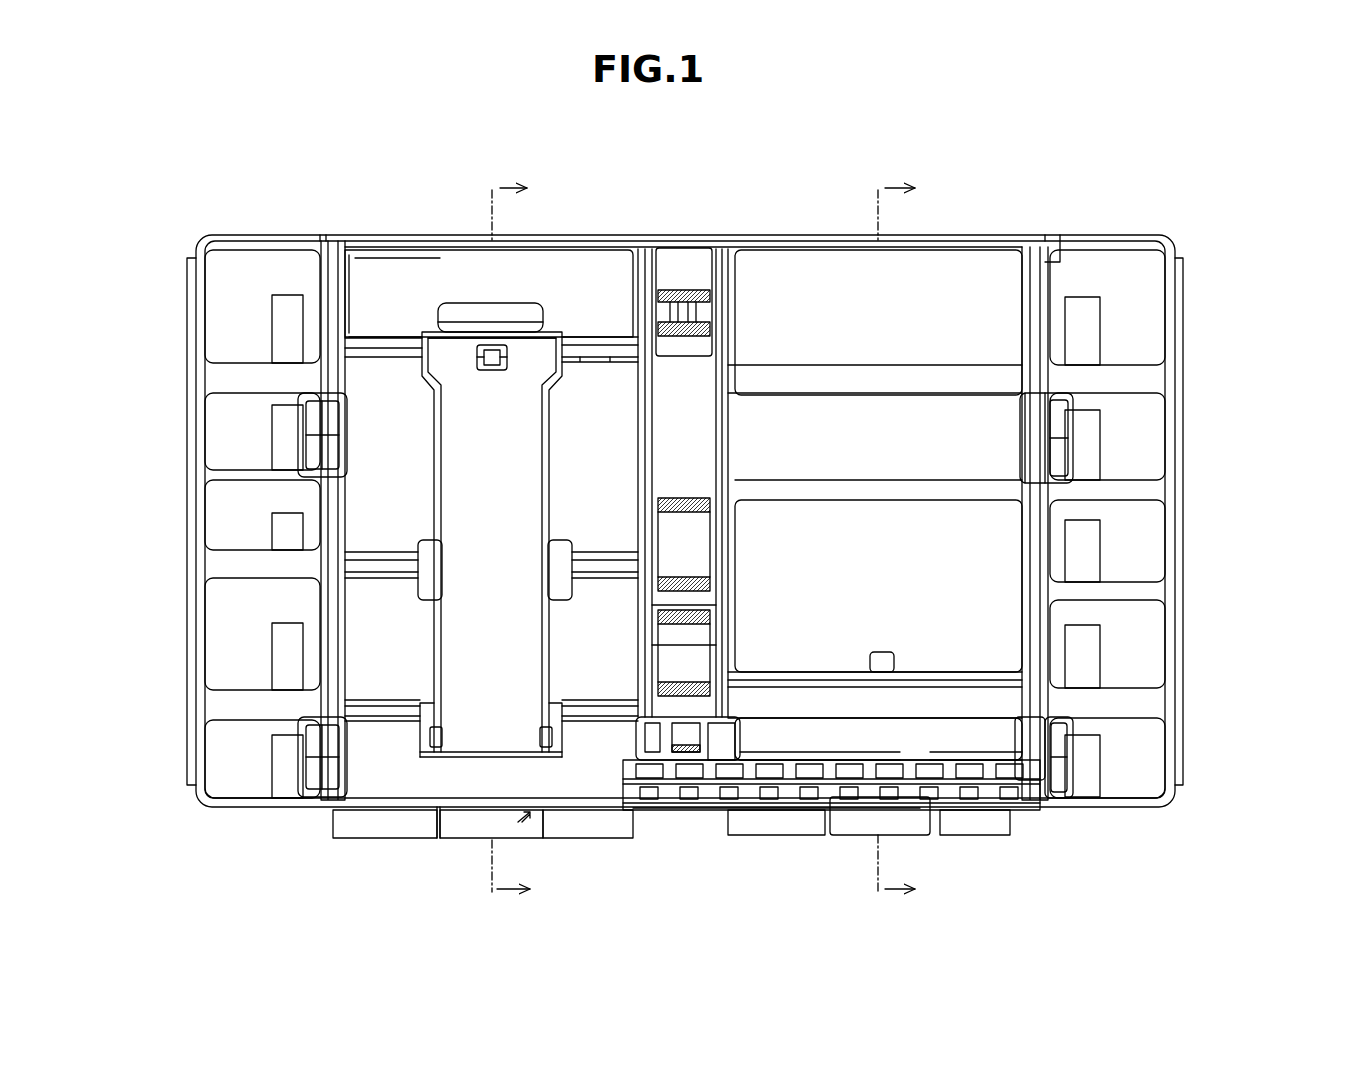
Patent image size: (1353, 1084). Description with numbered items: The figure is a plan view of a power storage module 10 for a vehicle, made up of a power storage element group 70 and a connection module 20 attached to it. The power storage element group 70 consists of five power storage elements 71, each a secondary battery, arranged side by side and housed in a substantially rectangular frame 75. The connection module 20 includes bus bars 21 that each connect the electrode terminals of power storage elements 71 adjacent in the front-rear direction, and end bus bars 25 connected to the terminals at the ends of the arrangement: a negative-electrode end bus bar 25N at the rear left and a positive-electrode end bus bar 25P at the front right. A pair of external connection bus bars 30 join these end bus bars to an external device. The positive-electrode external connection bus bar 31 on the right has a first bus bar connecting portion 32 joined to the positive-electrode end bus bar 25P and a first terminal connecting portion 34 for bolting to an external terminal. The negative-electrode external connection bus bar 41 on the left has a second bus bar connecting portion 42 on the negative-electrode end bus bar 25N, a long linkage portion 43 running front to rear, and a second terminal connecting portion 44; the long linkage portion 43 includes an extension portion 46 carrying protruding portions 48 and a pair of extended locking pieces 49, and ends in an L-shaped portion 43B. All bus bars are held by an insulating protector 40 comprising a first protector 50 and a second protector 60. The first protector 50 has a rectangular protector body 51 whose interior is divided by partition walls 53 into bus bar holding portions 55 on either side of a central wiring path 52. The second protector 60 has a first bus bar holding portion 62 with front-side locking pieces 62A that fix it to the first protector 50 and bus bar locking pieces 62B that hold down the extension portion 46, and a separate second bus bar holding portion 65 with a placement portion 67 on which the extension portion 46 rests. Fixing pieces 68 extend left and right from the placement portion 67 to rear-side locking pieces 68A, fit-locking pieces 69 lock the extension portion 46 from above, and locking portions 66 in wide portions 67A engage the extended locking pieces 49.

The power storage module 10 is at (270, 207).
The connection module 20 is at (826, 222).
The bus bar 21 is at (982, 283).
The end bus bar 25 is at (820, 756).
The negative-electrode end bus bar 25N is at (378, 278).
The positive-electrode end bus bar 25P is at (1010, 773).
The external connection bus bar 30 is at (800, 913).
The positive-electrode external connection bus bar 31 is at (840, 815).
The first bus bar connecting portion 32 is at (927, 773).
The first terminal connecting portion 34 is at (902, 803).
The insulating protector 40 is at (285, 892).
The negative-electrode external connection bus bar 41 is at (547, 840).
The second bus bar connecting portion 42 is at (505, 312).
The long linkage portion 43 is at (434, 440).
The L-shaped portion 43B is at (452, 773).
The second terminal connecting portion 44 is at (458, 808).
The extension portion 46 is at (415, 662).
The protruding portion 48 is at (428, 368).
The extended locking piece 49 is at (425, 588).
The first protector 50 is at (325, 829).
The protector body 51 is at (766, 240).
The wiring path 52 is at (685, 262).
The partition wall 53 is at (595, 347).
The bus bar holding portion 55 is at (595, 243).
The second protector 60 is at (270, 762).
The first bus bar holding portion 62 is at (1078, 768).
The front-side locking piece 62A is at (1062, 750).
The bus bar locking piece 62B is at (517, 760).
The second bus bar holding portion 65 is at (420, 490).
The locking portion 66 is at (425, 555).
The placement portion 67 is at (550, 675).
The wide portion 67A is at (615, 552).
The fixing piece 68 is at (1047, 250).
The rear-side locking piece 68A is at (1062, 440).
The fit-locking piece 69 is at (488, 352).
The power storage element group 70 is at (1245, 288).
The power storage element 71 is at (1135, 305).
The frame 75 is at (1107, 245).